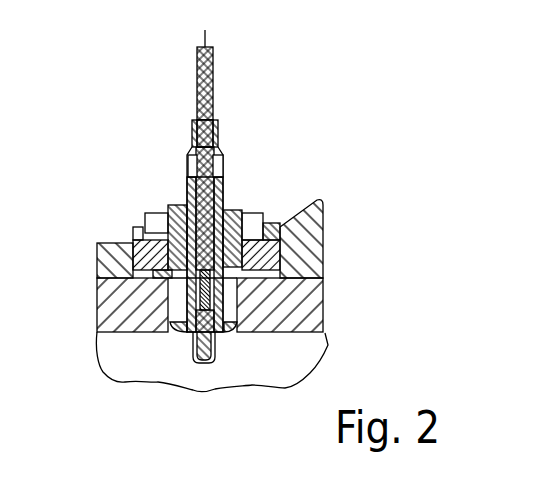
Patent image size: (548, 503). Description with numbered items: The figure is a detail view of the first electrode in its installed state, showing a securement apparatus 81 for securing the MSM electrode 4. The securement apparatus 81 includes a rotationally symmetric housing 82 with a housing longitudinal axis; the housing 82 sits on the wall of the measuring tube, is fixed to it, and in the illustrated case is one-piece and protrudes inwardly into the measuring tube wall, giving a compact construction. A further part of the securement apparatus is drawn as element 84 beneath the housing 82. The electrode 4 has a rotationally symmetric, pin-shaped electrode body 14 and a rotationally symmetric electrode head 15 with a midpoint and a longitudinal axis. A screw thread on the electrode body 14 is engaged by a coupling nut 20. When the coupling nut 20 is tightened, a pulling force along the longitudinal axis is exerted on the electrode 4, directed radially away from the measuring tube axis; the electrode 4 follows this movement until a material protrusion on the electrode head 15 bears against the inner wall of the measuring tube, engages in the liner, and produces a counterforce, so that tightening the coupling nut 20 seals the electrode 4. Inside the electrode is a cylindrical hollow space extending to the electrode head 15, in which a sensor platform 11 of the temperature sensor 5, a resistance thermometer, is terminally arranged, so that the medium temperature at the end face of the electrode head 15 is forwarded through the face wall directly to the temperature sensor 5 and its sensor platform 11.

The electrode 4 is at (258, 133).
The temperature sensor 5 is at (223, 191).
The sensor platform 11 is at (218, 348).
The electrode body 14 is at (185, 205).
The electrode head 15 is at (212, 332).
The coupling nut 20 is at (232, 212).
The securement apparatus 81 is at (110, 228).
The housing 82 is at (283, 246).
The lower holder plate 84 is at (277, 296).